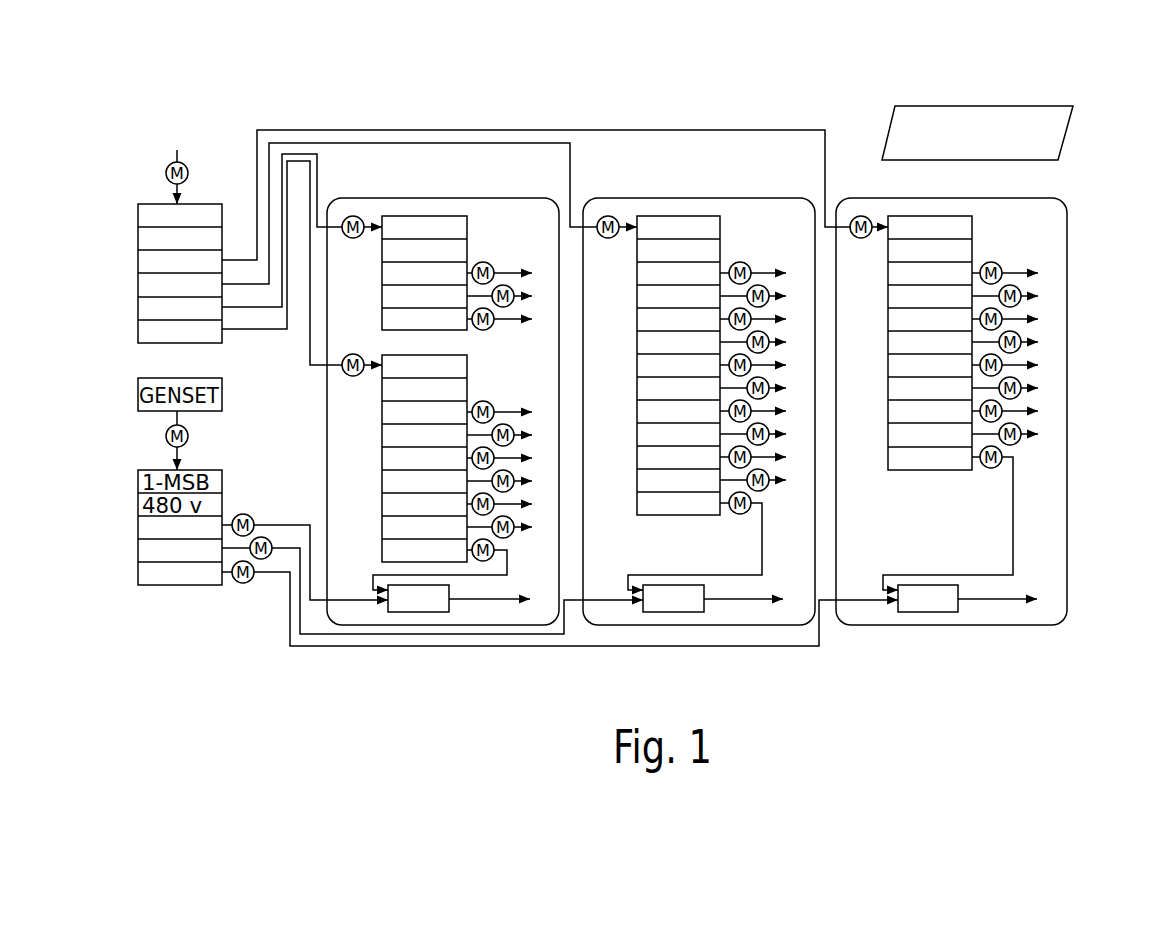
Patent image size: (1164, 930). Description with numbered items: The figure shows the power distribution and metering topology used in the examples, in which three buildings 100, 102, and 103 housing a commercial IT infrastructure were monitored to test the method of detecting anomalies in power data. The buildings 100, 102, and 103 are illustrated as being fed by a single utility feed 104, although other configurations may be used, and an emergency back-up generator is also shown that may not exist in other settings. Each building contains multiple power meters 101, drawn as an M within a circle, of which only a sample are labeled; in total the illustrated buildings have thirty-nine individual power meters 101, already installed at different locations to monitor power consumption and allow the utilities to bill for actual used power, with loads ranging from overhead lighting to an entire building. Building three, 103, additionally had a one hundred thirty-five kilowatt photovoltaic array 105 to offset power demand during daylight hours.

The building 100 is at (413, 625).
The power meter 101 is at (215, 176).
The building 102 is at (690, 625).
The building 103 is at (942, 625).
The utility feed 104 is at (230, 122).
The photovoltaic array 105 is at (1065, 141).